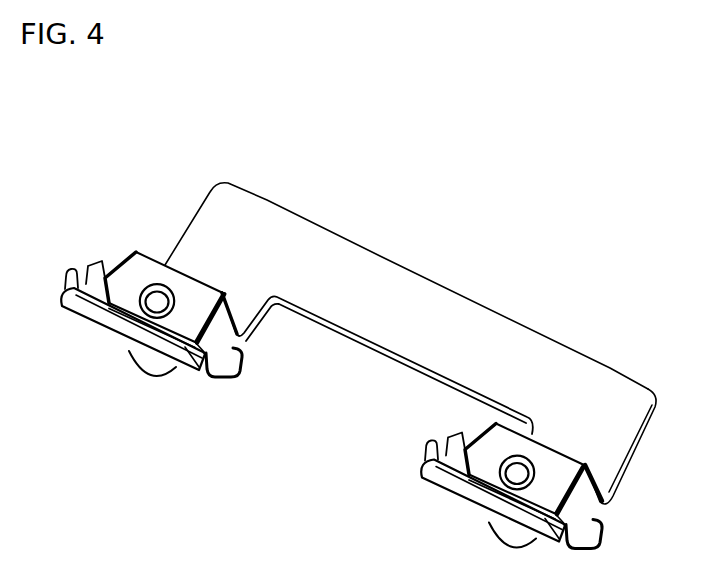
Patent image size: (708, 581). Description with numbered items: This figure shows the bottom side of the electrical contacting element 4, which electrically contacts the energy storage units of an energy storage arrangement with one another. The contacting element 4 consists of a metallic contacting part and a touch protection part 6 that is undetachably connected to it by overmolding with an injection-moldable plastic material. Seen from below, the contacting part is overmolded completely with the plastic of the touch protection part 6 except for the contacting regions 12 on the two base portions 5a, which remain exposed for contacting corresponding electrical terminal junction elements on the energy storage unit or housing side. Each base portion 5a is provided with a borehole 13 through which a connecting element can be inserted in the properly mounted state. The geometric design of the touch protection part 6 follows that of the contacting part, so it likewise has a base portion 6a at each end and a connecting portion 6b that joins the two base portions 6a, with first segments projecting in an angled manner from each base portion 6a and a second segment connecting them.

The contacting element 4 is at (355, 172).
The touch protection part 6 is at (438, 281).
The base portion 6a is at (592, 480).
The connecting portion 6b is at (508, 338).
The contacting region 12 is at (140, 270).
The borehole 13 is at (152, 270).
The base portion 5a is at (493, 453).